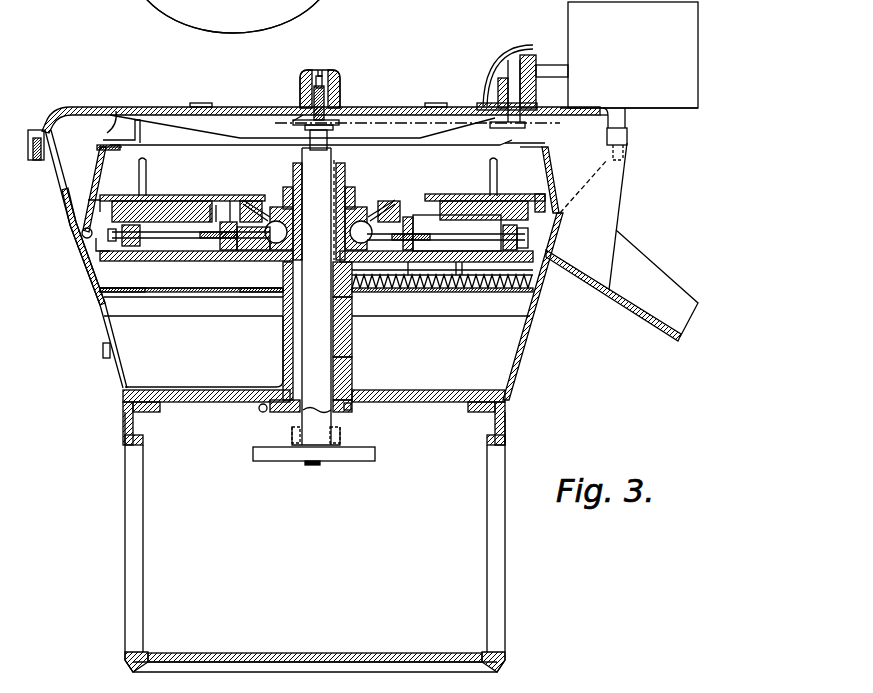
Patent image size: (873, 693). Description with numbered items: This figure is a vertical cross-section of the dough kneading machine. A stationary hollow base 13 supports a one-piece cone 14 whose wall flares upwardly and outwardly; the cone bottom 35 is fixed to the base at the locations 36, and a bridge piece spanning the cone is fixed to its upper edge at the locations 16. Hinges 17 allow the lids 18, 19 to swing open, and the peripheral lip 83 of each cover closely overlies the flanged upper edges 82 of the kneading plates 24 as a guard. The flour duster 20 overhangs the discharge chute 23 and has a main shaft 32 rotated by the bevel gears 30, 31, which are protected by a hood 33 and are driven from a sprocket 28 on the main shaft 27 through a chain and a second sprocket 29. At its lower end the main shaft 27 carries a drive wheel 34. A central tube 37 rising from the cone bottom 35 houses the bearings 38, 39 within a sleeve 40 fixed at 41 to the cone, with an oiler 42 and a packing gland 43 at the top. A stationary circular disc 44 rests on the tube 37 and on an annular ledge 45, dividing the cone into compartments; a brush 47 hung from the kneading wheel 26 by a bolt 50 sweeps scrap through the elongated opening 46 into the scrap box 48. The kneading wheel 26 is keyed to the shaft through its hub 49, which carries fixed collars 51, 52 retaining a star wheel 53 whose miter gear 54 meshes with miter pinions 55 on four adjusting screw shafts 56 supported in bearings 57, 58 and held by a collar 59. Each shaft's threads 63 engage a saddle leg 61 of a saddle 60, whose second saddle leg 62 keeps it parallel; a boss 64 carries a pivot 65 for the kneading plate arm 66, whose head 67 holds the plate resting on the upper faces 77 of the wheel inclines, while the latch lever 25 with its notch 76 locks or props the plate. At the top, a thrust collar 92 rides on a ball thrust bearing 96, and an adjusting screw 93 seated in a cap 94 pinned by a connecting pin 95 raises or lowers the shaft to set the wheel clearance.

The base 13 is at (507, 431).
The cone 14 is at (55, 182).
The fixing locations 16 is at (36, 130).
The hinges 17 is at (206, 103).
The lid 18 is at (148, 108).
The lid 19 is at (116, 110).
The flour duster 20 is at (695, 34).
The discharge chute 23 is at (663, 319).
The kneading plates 24 is at (100, 160).
The latch lever 25 is at (139, 175).
The kneading wheel 26 is at (458, 280).
The main shaft 27 is at (300, 155).
The sprocket 28 is at (297, 118).
The second sprocket 29 is at (527, 126).
The chain 30 is at (389, 122).
The bevel gear 31 is at (517, 57).
The duster main shaft 32 is at (546, 64).
The hood 33 is at (497, 60).
The drive wheel 34 is at (375, 455).
The cone bottom 35 is at (202, 402).
The fixation locations 36 is at (141, 415).
The central tube 37 is at (352, 372).
The bearing 38 is at (346, 305).
The bearing 39 is at (345, 426).
The sleeve 40 is at (350, 356).
The sleeve fixation 41 is at (352, 410).
The oiler 42 is at (273, 414).
The packing gland 43 is at (281, 290).
The circular disc 44 is at (489, 280).
The annular ledge 45 is at (100, 300).
The elongated opening 46 is at (153, 290).
The brush 47 is at (409, 280).
The scrap box 48 is at (340, 160).
The hub 49 is at (346, 173).
The bolt 50 is at (437, 262).
The collar 51 is at (355, 200).
The collar 52 is at (378, 208).
The star wheel 53 is at (266, 206).
The miter gear 54 is at (281, 204).
The miter pinions 55 is at (254, 258).
The adjusting screw shafts 56 is at (182, 240).
The bearing 57 is at (228, 258).
The bearing 58 is at (136, 258).
The collar 59 is at (100, 248).
The saddle 60 is at (176, 200).
The saddle leg 61 is at (213, 205).
The second saddle leg 62 is at (152, 256).
The threads 63 is at (207, 222).
The boss 64 is at (217, 192).
The pivot 65 is at (200, 197).
The kneading plate arm 66 is at (158, 195).
The head 67 is at (90, 205).
The notch 76 is at (489, 158).
The upper faces 77 is at (83, 232).
The flanged upper edges 82 is at (100, 146).
The peripheral lip 83 is at (110, 134).
The thrust collar 92 is at (336, 95).
The adjusting screw 93 is at (325, 70).
The cap 94 is at (340, 76).
The connecting pin 95 is at (312, 68).
The ball thrust bearing 96 is at (341, 103).